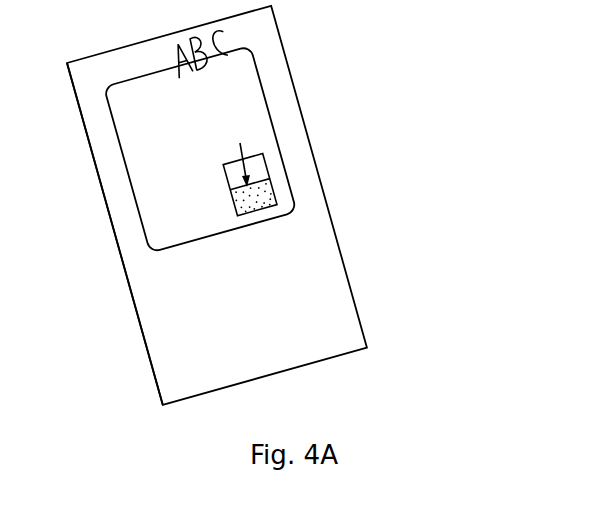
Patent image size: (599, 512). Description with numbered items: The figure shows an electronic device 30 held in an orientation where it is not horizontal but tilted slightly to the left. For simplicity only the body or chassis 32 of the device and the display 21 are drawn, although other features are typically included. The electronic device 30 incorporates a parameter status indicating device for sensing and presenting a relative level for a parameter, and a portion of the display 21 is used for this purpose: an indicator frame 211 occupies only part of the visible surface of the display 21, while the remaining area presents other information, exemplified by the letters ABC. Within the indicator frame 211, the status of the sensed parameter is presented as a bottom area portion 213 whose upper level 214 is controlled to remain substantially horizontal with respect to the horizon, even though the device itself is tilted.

The electronic device 30 is at (227, 205).
The body or chassis 32 is at (143, 337).
The display 21 is at (150, 232).
The indicator frame 211 is at (228, 179).
The bottom area portion 213 is at (252, 197).
The upper level 214 is at (238, 154).